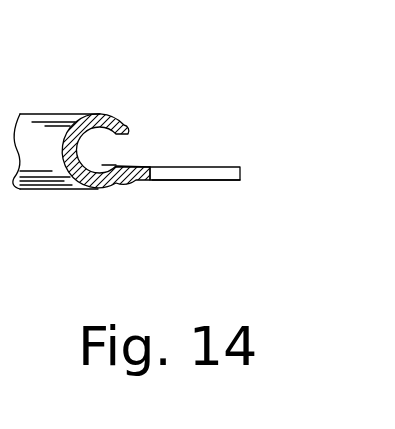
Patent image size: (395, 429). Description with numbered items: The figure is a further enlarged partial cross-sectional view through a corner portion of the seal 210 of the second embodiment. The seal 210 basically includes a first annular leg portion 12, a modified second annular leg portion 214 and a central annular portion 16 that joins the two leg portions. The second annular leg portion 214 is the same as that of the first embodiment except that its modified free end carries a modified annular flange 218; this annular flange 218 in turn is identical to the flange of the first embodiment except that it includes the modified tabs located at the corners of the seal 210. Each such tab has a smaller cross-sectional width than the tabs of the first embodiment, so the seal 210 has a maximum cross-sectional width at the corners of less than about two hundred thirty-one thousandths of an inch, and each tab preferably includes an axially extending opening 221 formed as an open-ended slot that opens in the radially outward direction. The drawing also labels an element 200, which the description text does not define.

The first annular leg portion 12 is at (103, 114).
The central annular portion 16 is at (53, 183).
The plate 200 is at (228, 166).
The seal 210 is at (214, 126).
The second annular leg portion 214 is at (100, 189).
The annular flange 218 is at (142, 165).
The axially extending opening 221 is at (200, 173).